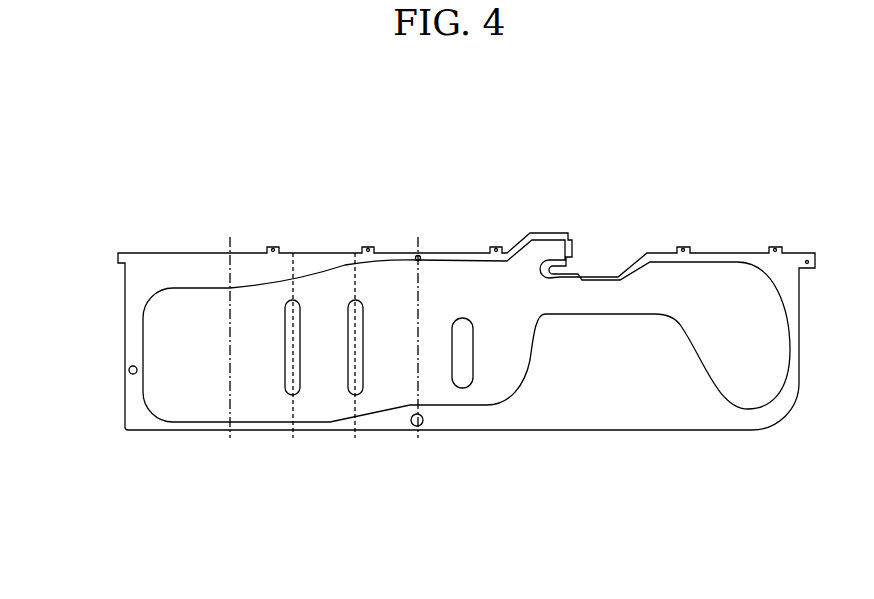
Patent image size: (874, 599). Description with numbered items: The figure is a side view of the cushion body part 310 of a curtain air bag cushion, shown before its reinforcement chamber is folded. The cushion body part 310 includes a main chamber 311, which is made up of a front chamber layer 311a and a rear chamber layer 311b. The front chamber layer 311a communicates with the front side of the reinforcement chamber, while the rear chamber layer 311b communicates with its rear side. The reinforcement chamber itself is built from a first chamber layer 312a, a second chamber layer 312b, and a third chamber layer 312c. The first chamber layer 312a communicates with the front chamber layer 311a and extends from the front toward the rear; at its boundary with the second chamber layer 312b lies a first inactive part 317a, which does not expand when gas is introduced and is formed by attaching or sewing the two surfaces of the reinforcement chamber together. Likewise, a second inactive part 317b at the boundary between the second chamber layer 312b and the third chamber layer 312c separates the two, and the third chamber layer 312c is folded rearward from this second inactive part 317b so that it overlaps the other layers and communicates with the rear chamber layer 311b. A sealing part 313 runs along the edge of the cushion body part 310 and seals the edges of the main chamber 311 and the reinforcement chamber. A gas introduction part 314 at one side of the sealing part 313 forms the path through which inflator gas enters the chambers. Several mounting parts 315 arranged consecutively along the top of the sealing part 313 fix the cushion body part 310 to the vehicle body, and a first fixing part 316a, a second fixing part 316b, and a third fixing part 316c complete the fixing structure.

The cushion body part 310 is at (614, 168).
The main chamber 311 is at (373, 532).
The front chamber layer 311a is at (190, 407).
The rear chamber layer 311b is at (510, 363).
The first chamber layer 312a is at (258, 407).
The second chamber layer 312b is at (325, 407).
The third chamber layer 312c is at (392, 397).
The sealing part 313 is at (790, 302).
The gas introduction part 314 is at (556, 238).
The mounting part 315 is at (274, 248).
The first fixing part 316a is at (420, 256).
The second fixing part 316b is at (424, 424).
The third fixing part 316c is at (133, 374).
The first inactive part 317a is at (297, 307).
The second inactive part 317b is at (360, 308).